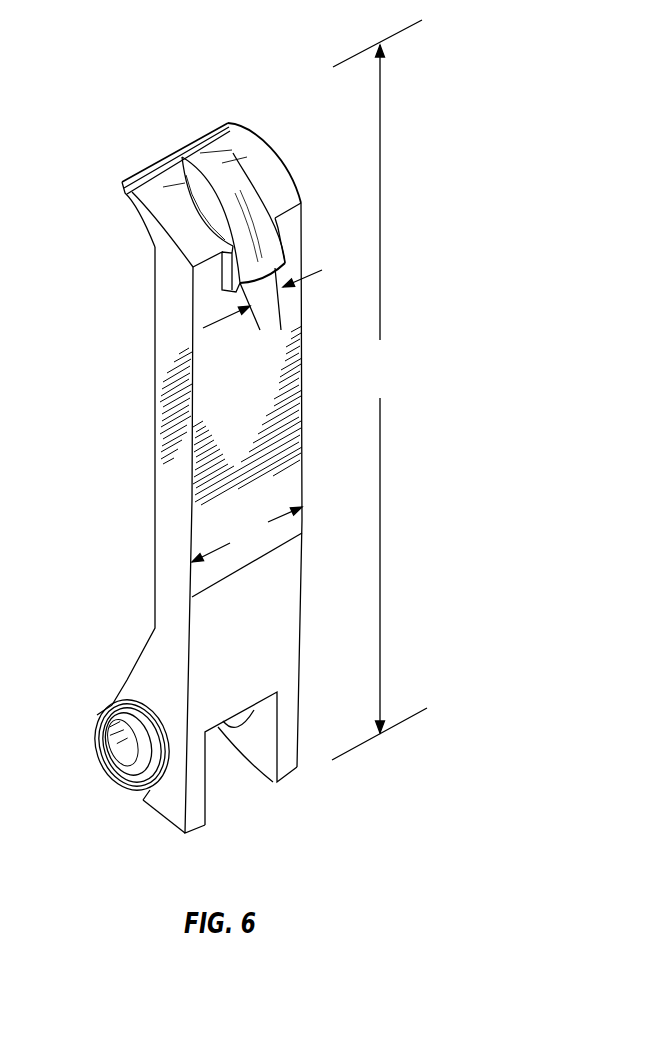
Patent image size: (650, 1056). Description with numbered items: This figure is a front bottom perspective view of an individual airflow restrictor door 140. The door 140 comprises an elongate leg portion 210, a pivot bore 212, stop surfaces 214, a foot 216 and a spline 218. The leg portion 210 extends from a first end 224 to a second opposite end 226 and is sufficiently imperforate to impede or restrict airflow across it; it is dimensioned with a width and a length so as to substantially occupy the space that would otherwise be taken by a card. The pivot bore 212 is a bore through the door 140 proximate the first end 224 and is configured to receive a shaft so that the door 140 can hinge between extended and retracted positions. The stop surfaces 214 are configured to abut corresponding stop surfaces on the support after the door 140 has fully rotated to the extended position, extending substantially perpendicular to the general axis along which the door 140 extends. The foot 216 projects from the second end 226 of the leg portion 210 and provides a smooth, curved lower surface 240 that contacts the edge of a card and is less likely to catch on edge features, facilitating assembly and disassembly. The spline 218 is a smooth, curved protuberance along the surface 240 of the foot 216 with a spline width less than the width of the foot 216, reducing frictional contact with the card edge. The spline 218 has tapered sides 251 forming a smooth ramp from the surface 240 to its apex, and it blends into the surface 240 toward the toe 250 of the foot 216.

The door 140 is at (420, 233).
The elongate leg portion 210 is at (303, 408).
The pivot bore 212 is at (113, 758).
The stop surfaces 214 is at (143, 793).
The foot 216 is at (124, 192).
The spline 218 is at (240, 197).
The first end 224 is at (233, 793).
The second opposite end 226 is at (168, 108).
The curved lower surface 240 is at (147, 170).
The toe 250 is at (210, 127).
The tapered sides 251 is at (168, 192).